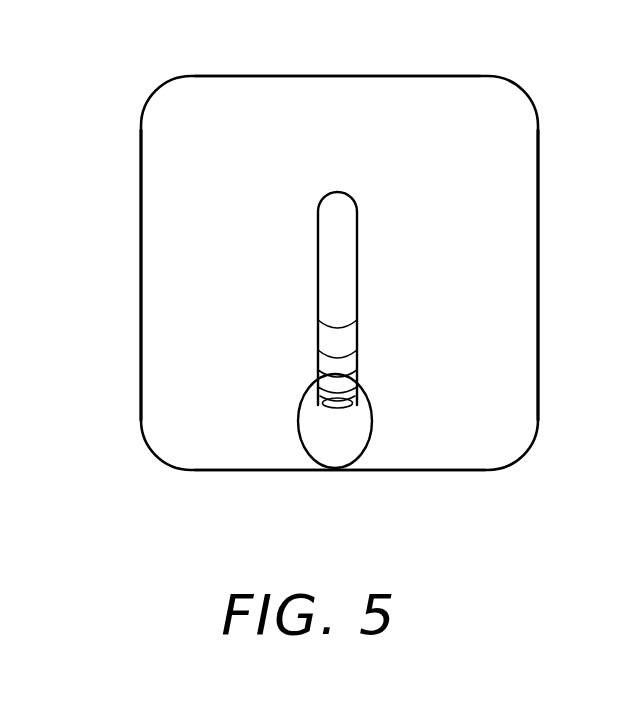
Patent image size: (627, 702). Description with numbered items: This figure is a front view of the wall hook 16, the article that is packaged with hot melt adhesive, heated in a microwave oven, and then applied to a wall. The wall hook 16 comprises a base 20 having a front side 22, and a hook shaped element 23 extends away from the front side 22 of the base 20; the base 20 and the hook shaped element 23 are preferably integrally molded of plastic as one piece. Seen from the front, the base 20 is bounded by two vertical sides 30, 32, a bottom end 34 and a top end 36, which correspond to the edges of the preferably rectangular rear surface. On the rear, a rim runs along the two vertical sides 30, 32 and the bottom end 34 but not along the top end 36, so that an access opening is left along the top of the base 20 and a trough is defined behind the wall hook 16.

The wall hook 16 is at (538, 272).
The base 20 is at (195, 440).
The front side 22 is at (178, 345).
The hook shaped element 23 is at (338, 208).
The vertical side 30 is at (538, 370).
The vertical side 32 is at (141, 270).
The bottom end 34 is at (432, 470).
The top end 36 is at (240, 76).